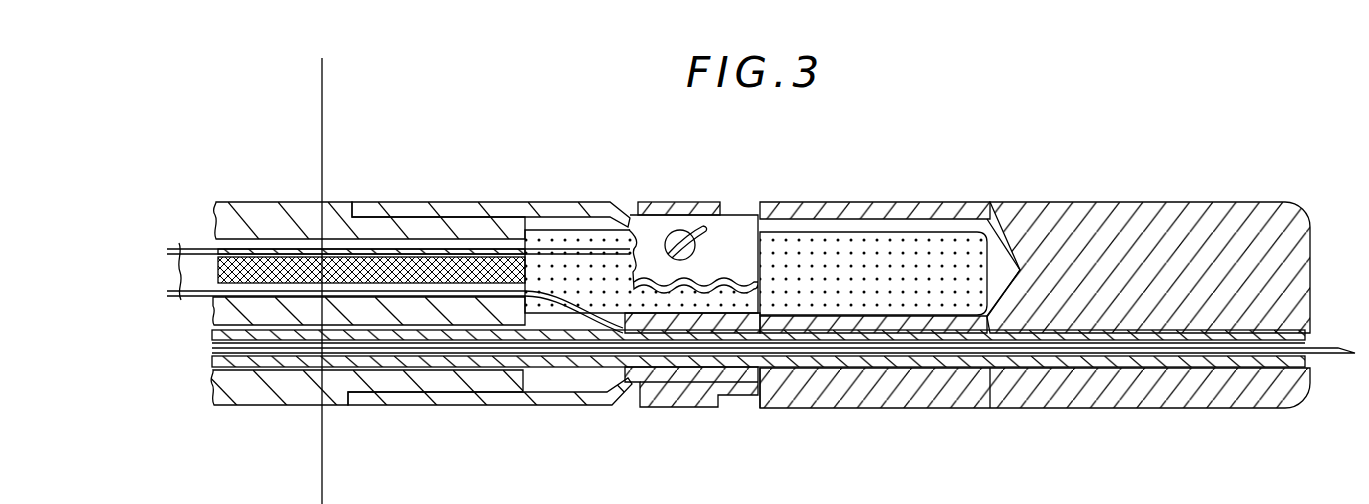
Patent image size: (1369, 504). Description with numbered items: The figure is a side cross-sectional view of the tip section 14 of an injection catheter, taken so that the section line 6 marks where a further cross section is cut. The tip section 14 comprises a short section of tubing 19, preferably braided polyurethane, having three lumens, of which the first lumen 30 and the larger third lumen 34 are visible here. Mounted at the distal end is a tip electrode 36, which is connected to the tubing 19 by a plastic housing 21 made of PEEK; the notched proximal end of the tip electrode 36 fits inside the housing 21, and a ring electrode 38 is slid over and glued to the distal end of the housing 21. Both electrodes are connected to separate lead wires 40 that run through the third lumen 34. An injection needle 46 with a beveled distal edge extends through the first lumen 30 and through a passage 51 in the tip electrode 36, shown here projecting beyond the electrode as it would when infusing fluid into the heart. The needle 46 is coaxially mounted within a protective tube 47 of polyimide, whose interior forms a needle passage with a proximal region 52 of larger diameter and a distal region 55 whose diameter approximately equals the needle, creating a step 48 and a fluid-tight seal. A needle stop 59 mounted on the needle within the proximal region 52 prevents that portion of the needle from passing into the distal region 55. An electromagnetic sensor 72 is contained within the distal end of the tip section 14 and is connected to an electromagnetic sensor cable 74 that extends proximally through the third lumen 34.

The section line 6- 6 is at (322, 58).
The tip section 14 is at (1000, 157).
The tubing 19 is at (257, 208).
The plastic housing 21 is at (533, 208).
The first lumen 30 is at (213, 368).
The third lumen 34 is at (250, 243).
The tip electrode 36 is at (937, 204).
The ring electrode 38 is at (652, 204).
The lead wire 40 is at (197, 253).
The injection needle 46 is at (593, 355).
The protective tube 47 is at (865, 370).
The step 48 is at (1007, 347).
The passage 51 is at (1170, 370).
The proximal region 52 is at (480, 355).
The distal region 55 is at (1043, 360).
The needle stop 59 is at (962, 362).
The electromagnetic sensor 72 is at (820, 265).
The electromagnetic sensor cable 74 is at (407, 268).